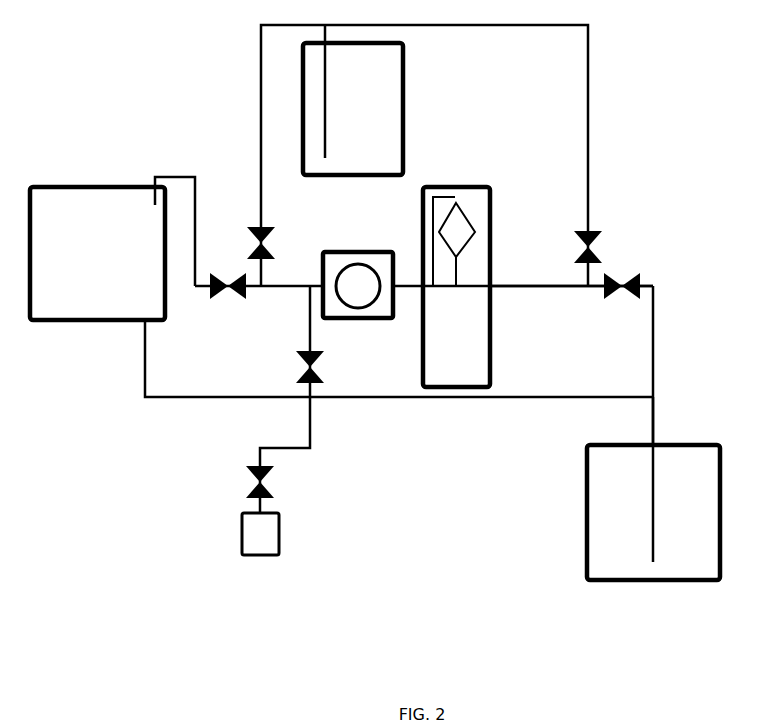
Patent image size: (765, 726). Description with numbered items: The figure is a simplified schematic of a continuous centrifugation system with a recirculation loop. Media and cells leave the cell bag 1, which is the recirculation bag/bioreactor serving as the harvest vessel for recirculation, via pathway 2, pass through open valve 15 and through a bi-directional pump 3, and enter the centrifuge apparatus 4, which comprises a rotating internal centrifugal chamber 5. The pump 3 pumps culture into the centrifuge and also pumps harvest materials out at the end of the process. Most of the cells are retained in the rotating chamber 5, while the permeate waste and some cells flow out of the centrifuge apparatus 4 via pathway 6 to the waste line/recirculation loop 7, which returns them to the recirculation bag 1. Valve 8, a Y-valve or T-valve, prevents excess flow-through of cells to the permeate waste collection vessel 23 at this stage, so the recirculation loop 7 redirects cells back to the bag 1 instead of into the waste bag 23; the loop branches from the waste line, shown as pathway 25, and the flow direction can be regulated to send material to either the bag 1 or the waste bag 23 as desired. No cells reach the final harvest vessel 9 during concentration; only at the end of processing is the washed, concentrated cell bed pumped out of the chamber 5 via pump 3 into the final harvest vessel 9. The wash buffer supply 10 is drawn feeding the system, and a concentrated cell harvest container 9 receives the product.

The cell bag 1 is at (91, 253).
The pathway 2 is at (188, 231).
The pump 3 is at (362, 306).
The centrifuge apparatus 4 is at (490, 287).
The rotating internal centrifugal chamber 5 is at (495, 241).
The pathway 6 is at (571, 298).
The recirculation loop 7 is at (384, 373).
The valve 8 is at (665, 424).
The final harvest vessel 9 is at (235, 486).
The wash buffer container 10 is at (353, 119).
The valve 15 is at (228, 294).
The permeate waste 23 is at (653, 522).
The pathway 25 is at (645, 432).